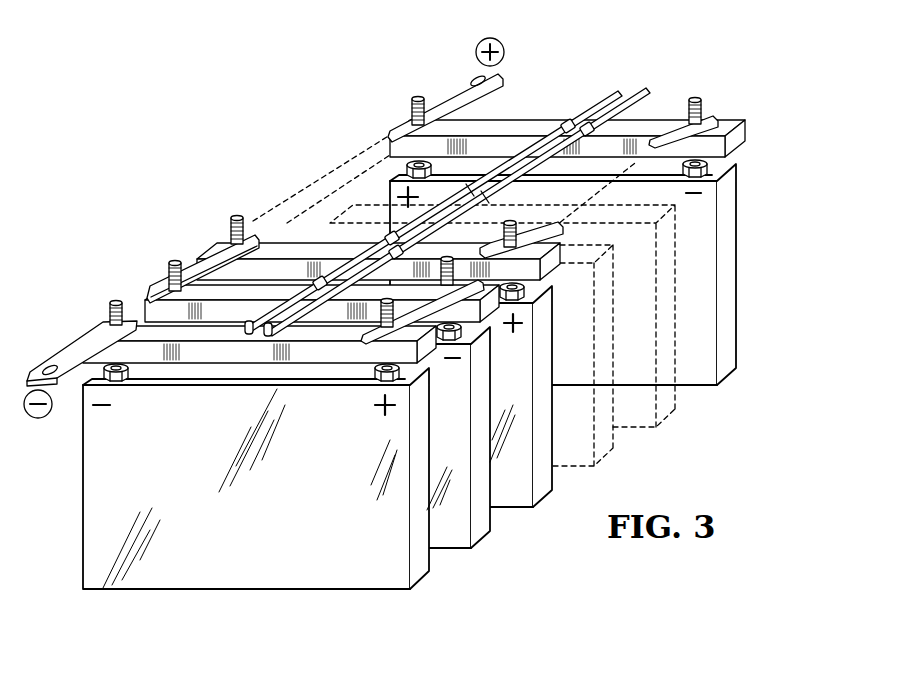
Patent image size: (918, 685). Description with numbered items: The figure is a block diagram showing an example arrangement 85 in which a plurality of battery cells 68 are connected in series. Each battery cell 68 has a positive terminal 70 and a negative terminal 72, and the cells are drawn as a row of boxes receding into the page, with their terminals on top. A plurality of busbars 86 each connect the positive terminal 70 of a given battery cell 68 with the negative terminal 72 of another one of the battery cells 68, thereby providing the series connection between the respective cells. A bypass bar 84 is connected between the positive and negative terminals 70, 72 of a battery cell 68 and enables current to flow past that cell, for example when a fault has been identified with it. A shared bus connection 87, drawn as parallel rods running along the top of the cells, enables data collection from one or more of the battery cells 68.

The battery cell 68 is at (418, 582).
The positive terminal 70 is at (400, 377).
The negative terminal 72 is at (461, 333).
The bypass bar 84 is at (303, 243).
The arrangement 85 is at (222, 158).
The busbar 86 is at (207, 252).
The shared bus connection 87 is at (640, 86).